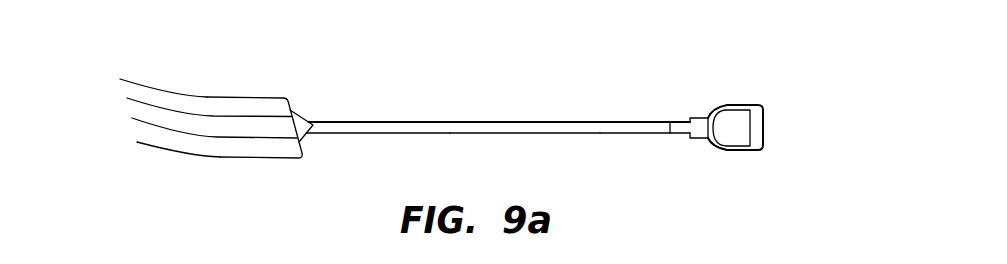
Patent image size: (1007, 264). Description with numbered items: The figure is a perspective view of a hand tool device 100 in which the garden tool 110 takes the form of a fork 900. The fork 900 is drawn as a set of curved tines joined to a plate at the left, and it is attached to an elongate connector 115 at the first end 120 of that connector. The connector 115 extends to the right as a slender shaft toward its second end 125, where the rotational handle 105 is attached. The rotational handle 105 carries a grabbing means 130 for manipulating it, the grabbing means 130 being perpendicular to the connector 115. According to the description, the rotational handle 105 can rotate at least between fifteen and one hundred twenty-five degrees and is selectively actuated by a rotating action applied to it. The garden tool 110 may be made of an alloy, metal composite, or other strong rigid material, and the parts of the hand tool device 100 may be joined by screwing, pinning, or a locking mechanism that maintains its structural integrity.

The hand tool device 100 is at (136, 46).
The rotational handle 105 is at (746, 175).
The garden tool 110 is at (127, 98).
The connector 115 is at (520, 121).
The first end 120 is at (400, 121).
The second end 125 is at (642, 121).
The grabbing means 130 is at (763, 128).
The fork 900 is at (262, 97).